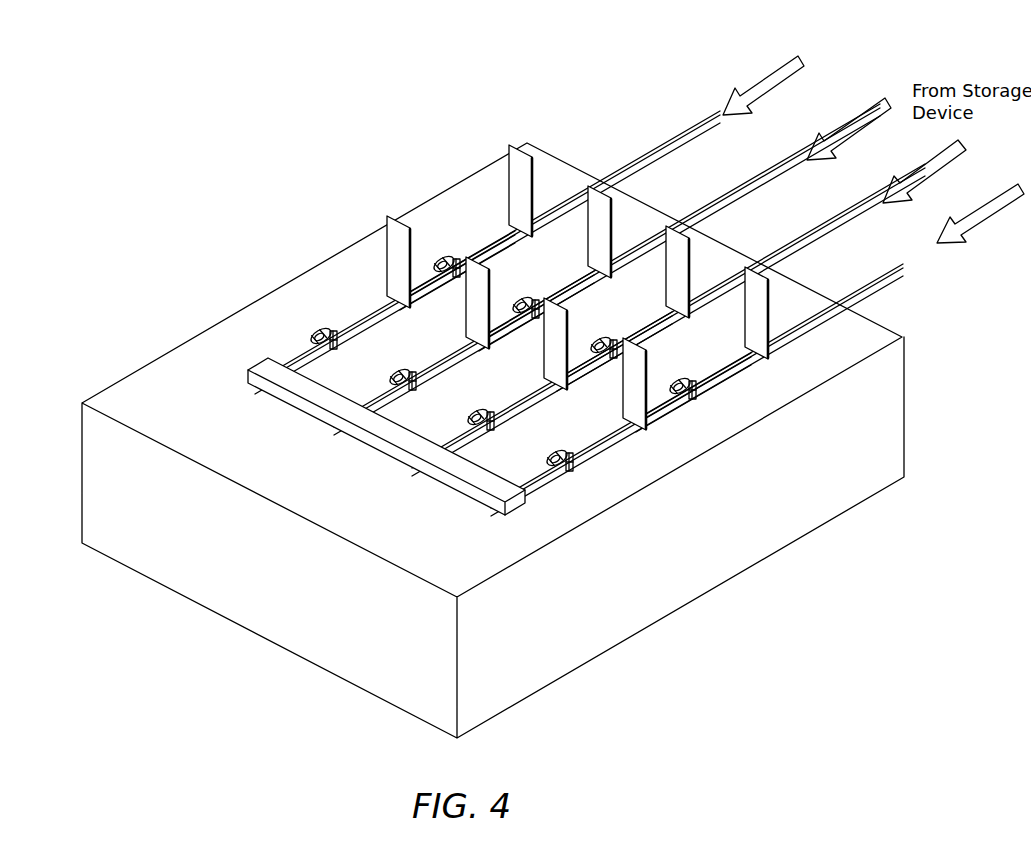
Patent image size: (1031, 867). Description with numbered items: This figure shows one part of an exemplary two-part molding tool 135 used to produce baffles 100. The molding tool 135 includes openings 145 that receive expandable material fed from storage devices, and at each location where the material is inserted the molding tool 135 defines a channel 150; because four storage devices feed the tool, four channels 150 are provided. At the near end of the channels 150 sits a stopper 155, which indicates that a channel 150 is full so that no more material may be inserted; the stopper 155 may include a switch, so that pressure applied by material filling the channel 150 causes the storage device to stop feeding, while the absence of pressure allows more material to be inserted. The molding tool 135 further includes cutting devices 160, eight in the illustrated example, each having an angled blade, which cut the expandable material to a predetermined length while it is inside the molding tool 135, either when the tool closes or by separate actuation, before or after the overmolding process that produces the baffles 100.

The baffle 100 is at (367, 321).
The molding tool 135 is at (194, 337).
The opening 145 is at (606, 182).
The channel 150 is at (495, 236).
The stopper 155 is at (316, 412).
The cutting device 160 is at (522, 146).